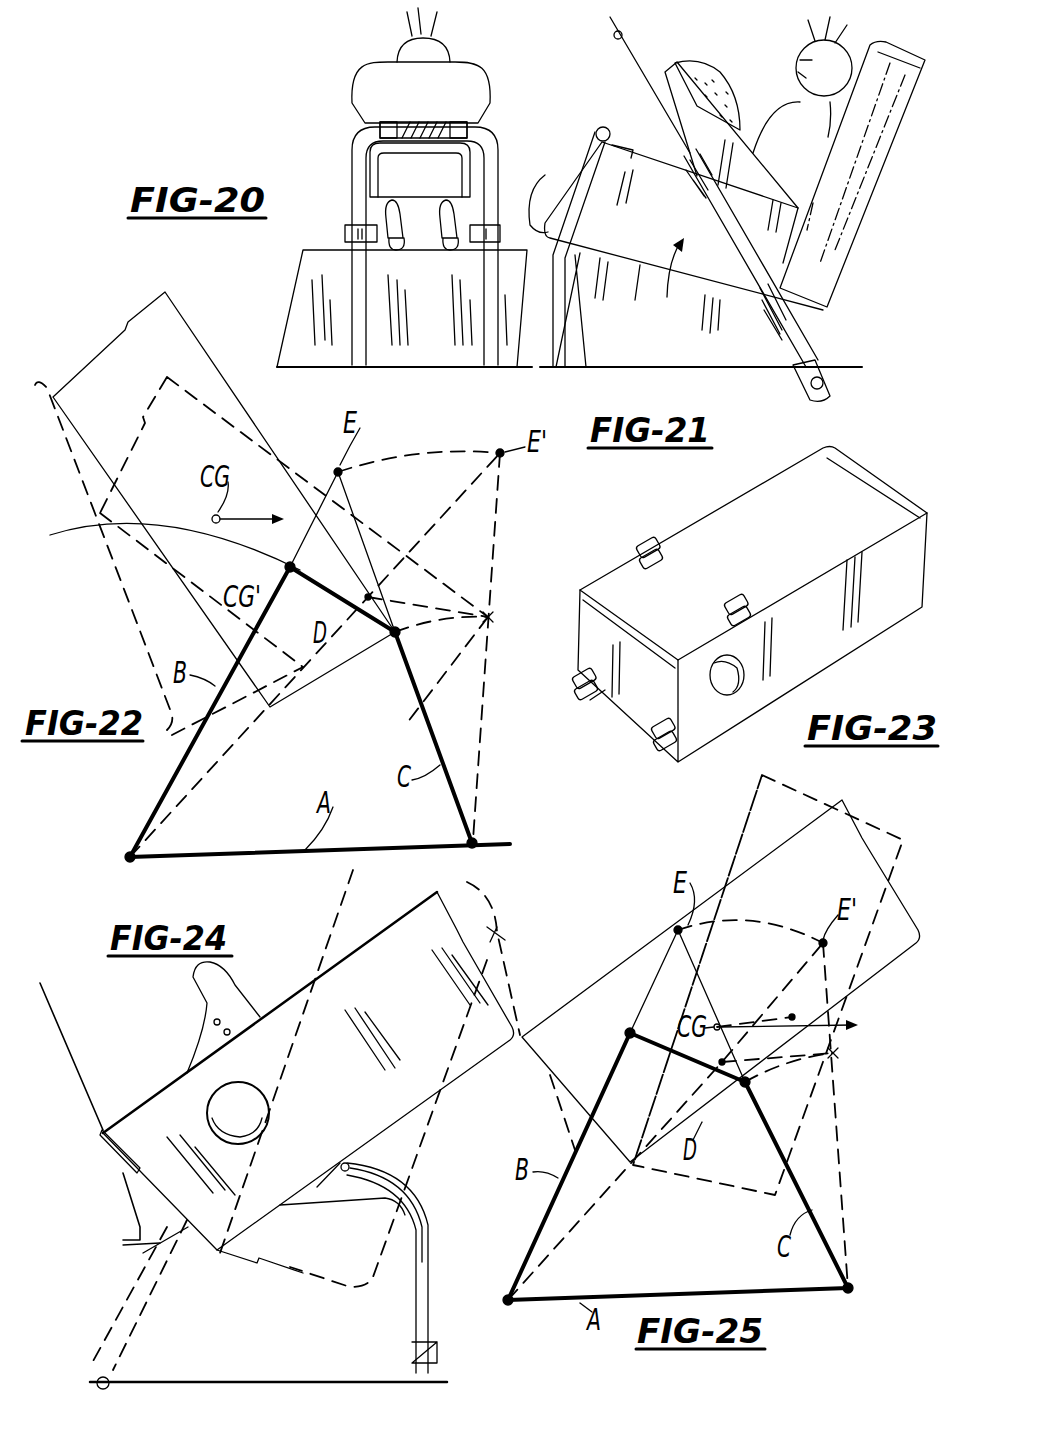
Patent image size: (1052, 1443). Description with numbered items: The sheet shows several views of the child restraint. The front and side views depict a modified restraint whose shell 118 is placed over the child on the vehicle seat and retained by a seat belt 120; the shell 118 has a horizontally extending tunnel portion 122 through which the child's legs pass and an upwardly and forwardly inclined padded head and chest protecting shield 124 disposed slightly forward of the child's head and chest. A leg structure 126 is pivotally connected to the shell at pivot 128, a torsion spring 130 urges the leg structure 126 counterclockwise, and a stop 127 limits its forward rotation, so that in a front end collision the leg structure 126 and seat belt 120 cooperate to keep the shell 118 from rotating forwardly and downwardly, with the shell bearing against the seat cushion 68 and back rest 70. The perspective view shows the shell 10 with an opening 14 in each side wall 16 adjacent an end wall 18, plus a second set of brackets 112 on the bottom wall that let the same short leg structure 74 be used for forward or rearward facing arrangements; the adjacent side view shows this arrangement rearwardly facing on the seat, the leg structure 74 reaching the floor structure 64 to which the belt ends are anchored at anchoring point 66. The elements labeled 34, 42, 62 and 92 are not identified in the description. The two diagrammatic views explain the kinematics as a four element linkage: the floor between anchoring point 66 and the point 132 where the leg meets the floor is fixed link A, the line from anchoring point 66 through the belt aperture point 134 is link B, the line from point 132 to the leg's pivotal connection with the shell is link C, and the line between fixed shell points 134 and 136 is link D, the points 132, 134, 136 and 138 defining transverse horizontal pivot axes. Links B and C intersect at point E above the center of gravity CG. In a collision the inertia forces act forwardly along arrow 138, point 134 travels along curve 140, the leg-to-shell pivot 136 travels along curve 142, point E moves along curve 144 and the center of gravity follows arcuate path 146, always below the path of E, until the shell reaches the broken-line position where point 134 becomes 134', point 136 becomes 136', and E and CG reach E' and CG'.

In FIG. 20, the head and chest protecting shield 124 is at (480, 80).
In FIG. 21, the head and chest protecting shield 124 is at (692, 98).
In FIG. 20, the torsion spring 130 is at (413, 122).
In FIG. 20, the pivotal connection 128 is at (460, 124).
In FIG. 21, the pivotal connection 128 is at (600, 130).
In FIG. 20, the tunnel portion 122 is at (400, 168).
In FIG. 21, the tunnel portion 122 is at (612, 243).
In FIG. 20, the stop 127 is at (345, 233).
In FIG. 21, the stop 127 is at (538, 204).
In FIG. 20, the leg structure 126 is at (365, 313).
In FIG. 21, the leg structure 126 is at (556, 360).
In FIG. 21, the back rest 70 is at (868, 168).
In FIG. 24, the back rest 70 is at (62, 1046).
In FIG. 21, the shell 118 is at (662, 289).
In FIG. 21, the seat cushion 68 is at (668, 335).
In FIG. 24, the seat cushion 68 is at (340, 1200).
In FIG. 21, the seat belt 120 is at (770, 355).
In FIG. 21, the anchoring point 66 is at (828, 384).
In FIG. 22, the anchoring point 66 is at (128, 855).
In FIG. 24, the anchoring point 66 is at (110, 1380).
In FIG. 25, the anchoring point 66 is at (508, 1305).
In FIG. 22, the leg contact point 132 is at (478, 843).
In FIG. 25, the leg contact point 132 is at (852, 1290).
In FIG. 22, the seat belt aperture point 134 is at (271, 545).
In FIG. 25, the seat belt aperture point 134 is at (611, 1020).
In FIG. 22, the pivotal connection between leg structure and shell 136 is at (368, 698).
In FIG. 25, the pivotal connection between leg structure and shell 136 is at (744, 1118).
In FIG. 22, the displaced position of point 134 134' is at (315, 655).
In FIG. 25, the displaced position of point 134 134' is at (670, 1121).
In FIG. 22, the displaced position of point 136 136' is at (482, 646).
In FIG. 25, the displaced position of point 136 136' is at (875, 1115).
In FIG. 22, the curve 140 is at (340, 553).
In FIG. 25, the curve 140 is at (665, 1062).
In FIG. 22, the curve 142 is at (465, 608).
In FIG. 25, the curve 142 is at (805, 1087).
In FIG. 22, the curve 144 is at (398, 450).
In FIG. 25, the curve 144 is at (742, 920).
In FIG. 22, the arcuate path 146 is at (250, 558).
In FIG. 25, the arcuate path 146 is at (748, 1012).
In FIG. 22, the arrow 138 is at (246, 514).
In FIG. 25, the arrow 138 is at (850, 1015).
In FIG. 23, the top wall 34 is at (780, 492).
In FIG. 23, the side wall 16 is at (868, 625).
In FIG. 23, the opening 14 is at (745, 690).
In FIG. 23, the brackets 112 is at (660, 565).
In FIG. 24, the brackets 112 is at (323, 1168).
In FIG. 23, the clip 92 is at (678, 752).
In FIG. 24, the clip 92 is at (112, 1154).
In FIG. 23, the end wall 18 is at (636, 698).
In FIG. 24, the bracket 42 is at (230, 990).
In FIG. 24, the shell 10 is at (476, 955).
In FIG. 24, the short leg structure 74 is at (436, 1298).
In FIG. 24, the base member 62 is at (135, 1317).
In FIG. 24, the floor structure 64 is at (312, 1382).